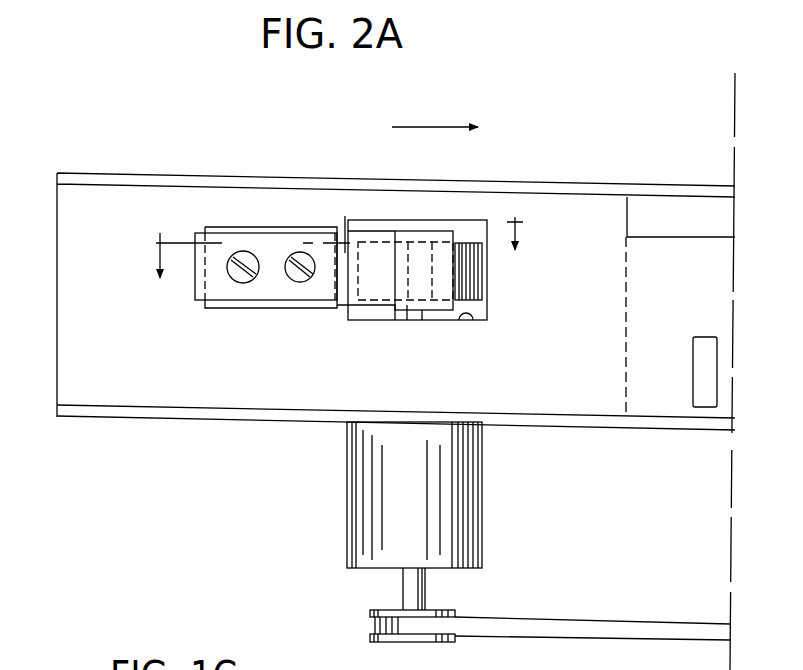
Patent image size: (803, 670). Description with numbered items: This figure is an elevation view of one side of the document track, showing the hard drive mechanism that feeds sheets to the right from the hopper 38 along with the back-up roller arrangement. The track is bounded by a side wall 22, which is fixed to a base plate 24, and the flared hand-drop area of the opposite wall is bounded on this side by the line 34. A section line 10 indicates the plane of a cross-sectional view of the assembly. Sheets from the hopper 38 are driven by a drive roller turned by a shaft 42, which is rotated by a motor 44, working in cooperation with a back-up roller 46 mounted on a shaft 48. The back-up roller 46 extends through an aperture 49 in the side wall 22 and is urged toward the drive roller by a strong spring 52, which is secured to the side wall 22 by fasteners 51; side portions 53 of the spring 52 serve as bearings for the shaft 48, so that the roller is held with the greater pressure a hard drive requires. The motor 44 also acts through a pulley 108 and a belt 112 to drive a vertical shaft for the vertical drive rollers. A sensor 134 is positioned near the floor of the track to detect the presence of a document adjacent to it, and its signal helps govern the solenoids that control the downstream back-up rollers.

The section line 10 is at (339, 262).
The side wall 22 is at (607, 184).
The base plate 24 is at (150, 414).
The line 34 is at (624, 320).
The hopper 38 is at (177, 165).
The shaft 42 is at (420, 317).
The motor 44 is at (357, 487).
The back-up roller 46 is at (482, 286).
The shaft 48 is at (407, 278).
The aperture 49 is at (470, 323).
The fasteners 51 is at (297, 253).
The spring 52 is at (288, 297).
The side portions 53 is at (440, 230).
The pulley 108 is at (380, 612).
The belt 112 is at (612, 628).
The sensor 134 is at (700, 365).